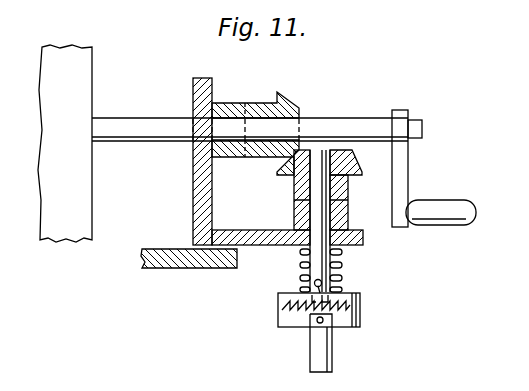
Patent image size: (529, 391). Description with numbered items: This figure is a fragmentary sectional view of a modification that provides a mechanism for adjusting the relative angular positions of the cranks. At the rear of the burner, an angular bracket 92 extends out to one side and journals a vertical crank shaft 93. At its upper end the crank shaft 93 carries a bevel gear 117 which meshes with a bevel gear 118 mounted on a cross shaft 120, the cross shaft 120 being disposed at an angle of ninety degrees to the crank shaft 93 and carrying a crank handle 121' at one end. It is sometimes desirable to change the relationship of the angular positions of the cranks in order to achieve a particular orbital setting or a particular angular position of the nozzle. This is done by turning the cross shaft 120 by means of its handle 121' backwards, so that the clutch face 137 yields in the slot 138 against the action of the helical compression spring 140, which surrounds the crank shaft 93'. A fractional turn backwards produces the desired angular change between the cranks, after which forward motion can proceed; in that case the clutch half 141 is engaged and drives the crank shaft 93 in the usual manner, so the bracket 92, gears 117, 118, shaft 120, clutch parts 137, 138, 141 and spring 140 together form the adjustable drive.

The angular bracket 92 is at (243, 236).
The crank shaft 93 is at (348, 261).
The crank shaft 93' is at (342, 190).
The bevel gear 117 is at (337, 163).
The bevel gear 118 is at (287, 99).
The cross shaft 120 is at (345, 127).
The crank handle 121' is at (440, 168).
The clutch face 137 is at (353, 302).
The slot 138 is at (314, 282).
The helical compression spring 140 is at (301, 265).
The clutch half 141 is at (362, 320).